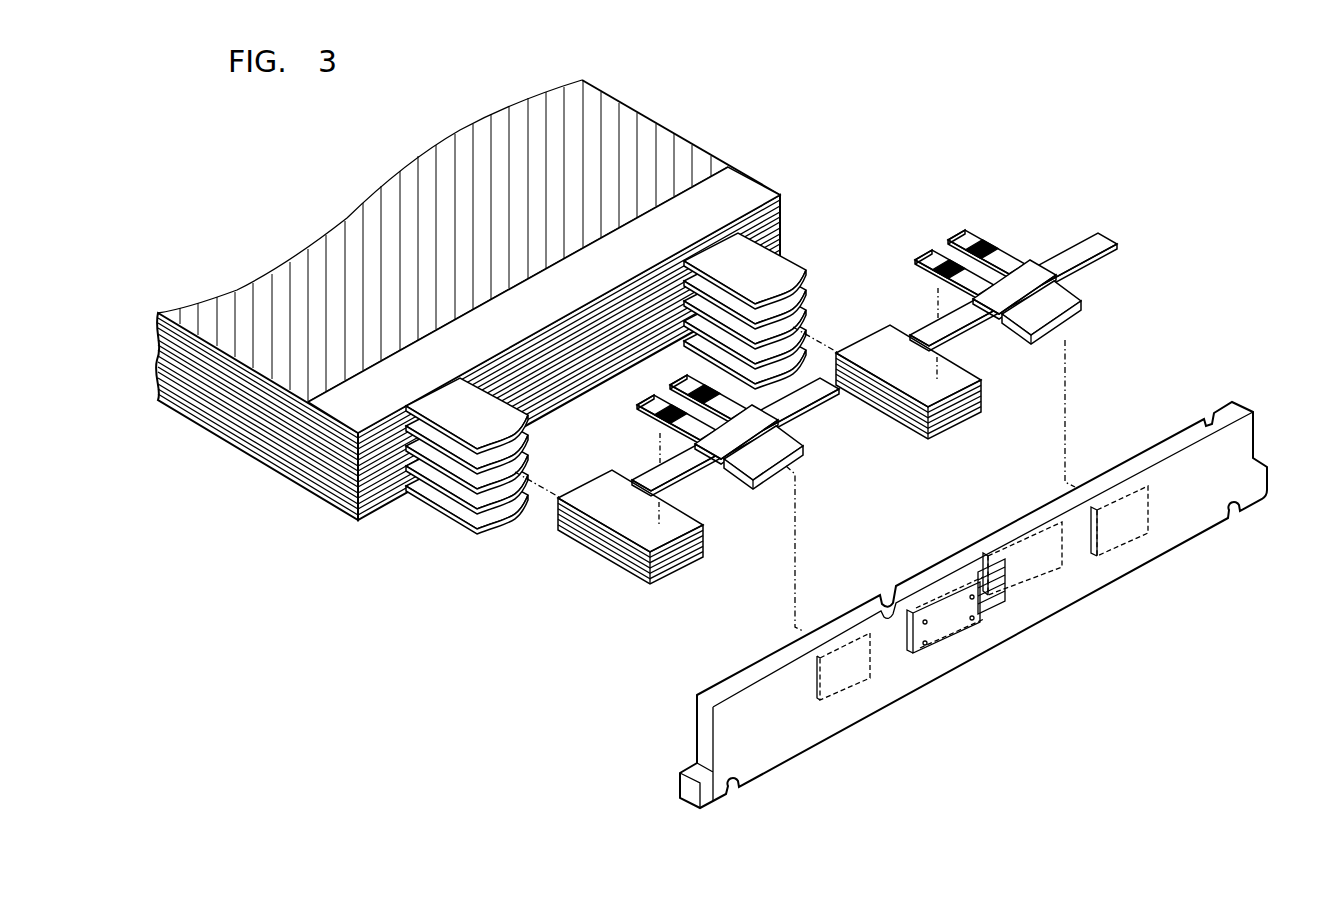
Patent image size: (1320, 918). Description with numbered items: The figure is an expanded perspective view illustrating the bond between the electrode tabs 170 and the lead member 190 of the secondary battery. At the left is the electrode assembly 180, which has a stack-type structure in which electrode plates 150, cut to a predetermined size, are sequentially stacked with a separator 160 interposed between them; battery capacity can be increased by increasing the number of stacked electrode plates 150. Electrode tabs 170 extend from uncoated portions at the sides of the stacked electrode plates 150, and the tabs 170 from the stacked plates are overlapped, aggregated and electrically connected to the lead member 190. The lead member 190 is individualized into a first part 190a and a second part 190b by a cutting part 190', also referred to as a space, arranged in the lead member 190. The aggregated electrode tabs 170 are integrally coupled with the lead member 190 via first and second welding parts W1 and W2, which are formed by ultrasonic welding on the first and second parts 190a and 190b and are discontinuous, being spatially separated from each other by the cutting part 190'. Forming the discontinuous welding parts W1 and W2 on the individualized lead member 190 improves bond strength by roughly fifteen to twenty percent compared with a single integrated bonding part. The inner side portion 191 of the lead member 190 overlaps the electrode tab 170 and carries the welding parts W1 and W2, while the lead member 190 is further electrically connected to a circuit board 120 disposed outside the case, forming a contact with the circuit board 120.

The circuit board 120 is at (740, 682).
The electrode plate 150 is at (297, 402).
The separator 160 is at (323, 420).
The electrode tabs 170 is at (467, 427).
The electrode assembly 180 is at (724, 126).
The lead member 190 is at (929, 379).
The cutting part 190' is at (709, 379).
The first part 190a is at (655, 395).
The second part 190b is at (685, 386).
The inner side portion 191 is at (1098, 240).
The first welding part W1 is at (655, 422).
The second welding part W2 is at (793, 415).